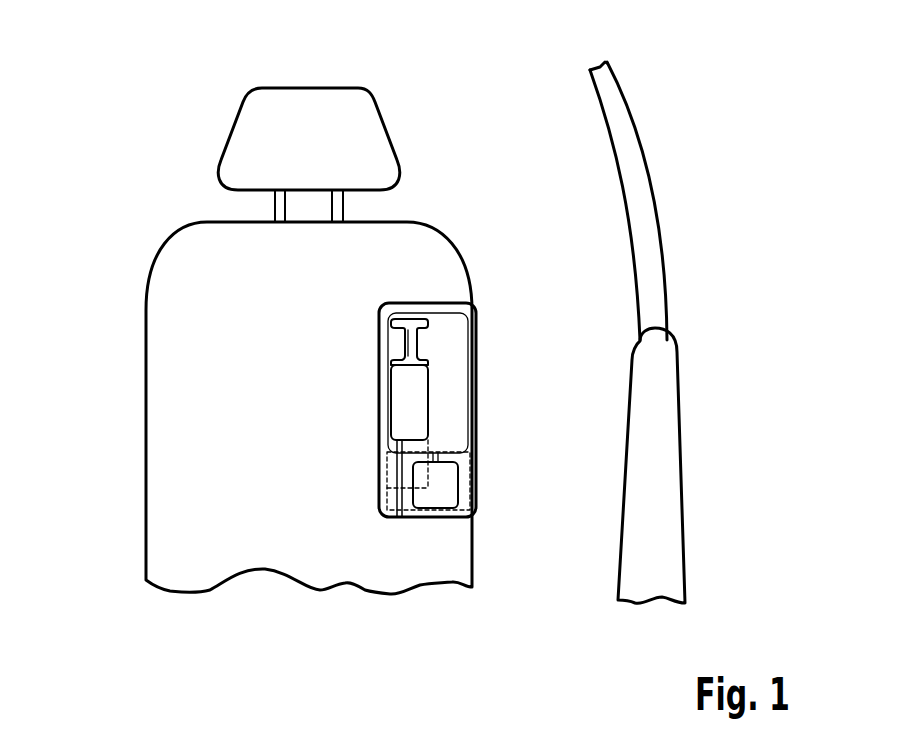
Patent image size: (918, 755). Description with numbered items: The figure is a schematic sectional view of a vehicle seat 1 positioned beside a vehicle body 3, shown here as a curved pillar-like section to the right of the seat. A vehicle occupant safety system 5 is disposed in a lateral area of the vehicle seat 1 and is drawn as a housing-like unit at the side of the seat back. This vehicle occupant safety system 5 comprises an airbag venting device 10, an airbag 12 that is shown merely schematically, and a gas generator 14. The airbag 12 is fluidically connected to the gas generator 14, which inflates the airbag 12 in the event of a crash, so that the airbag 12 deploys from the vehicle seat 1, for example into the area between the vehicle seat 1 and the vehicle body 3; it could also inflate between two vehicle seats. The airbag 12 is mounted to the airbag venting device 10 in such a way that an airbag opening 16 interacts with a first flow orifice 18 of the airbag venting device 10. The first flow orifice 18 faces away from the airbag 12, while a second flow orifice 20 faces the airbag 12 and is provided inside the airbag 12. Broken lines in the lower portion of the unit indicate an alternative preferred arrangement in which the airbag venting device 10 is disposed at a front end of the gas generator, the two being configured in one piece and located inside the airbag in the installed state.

The vehicle seat 1 is at (180, 94).
The vehicle body 3 is at (688, 112).
The vehicle occupant safety system 5 is at (505, 291).
The airbag venting device 10 is at (403, 405).
The airbag 12 is at (445, 400).
The gas generator 14 is at (443, 490).
The airbag opening 16 is at (427, 369).
The first flow orifice 18 is at (400, 337).
The second flow orifice 20 is at (422, 345).